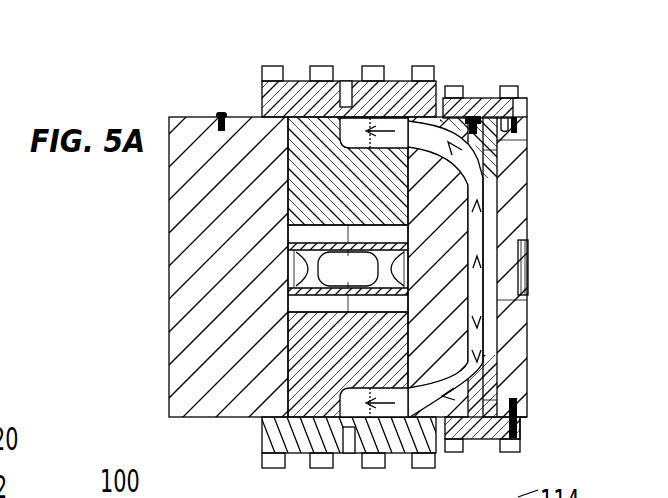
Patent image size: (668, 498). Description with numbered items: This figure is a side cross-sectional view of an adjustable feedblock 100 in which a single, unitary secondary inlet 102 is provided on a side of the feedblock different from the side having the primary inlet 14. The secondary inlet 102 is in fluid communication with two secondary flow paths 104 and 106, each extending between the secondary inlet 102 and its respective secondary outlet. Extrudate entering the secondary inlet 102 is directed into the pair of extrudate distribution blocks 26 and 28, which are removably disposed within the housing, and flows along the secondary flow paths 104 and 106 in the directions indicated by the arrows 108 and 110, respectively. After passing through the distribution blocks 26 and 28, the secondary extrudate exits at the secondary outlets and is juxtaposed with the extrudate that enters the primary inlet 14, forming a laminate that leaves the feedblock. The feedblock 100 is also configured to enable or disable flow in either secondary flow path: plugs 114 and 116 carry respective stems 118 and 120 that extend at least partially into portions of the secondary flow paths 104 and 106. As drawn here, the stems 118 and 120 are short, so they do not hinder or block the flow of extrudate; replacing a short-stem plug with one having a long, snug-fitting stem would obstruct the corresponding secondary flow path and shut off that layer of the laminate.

The primary inlet 14 is at (342, 266).
The extrudate distribution block 26 is at (297, 118).
The extrudate distribution block 28 is at (300, 382).
The feedblock 100 is at (113, 195).
The secondary inlet 102 is at (528, 264).
The secondary flow path 104 is at (500, 228).
The secondary flow path 106 is at (500, 306).
The arrow 108 is at (500, 188).
The arrow 110 is at (500, 346).
The plug 114 is at (472, 96).
The plug 116 is at (492, 447).
The stem 118 is at (527, 146).
The stem 120 is at (500, 398).